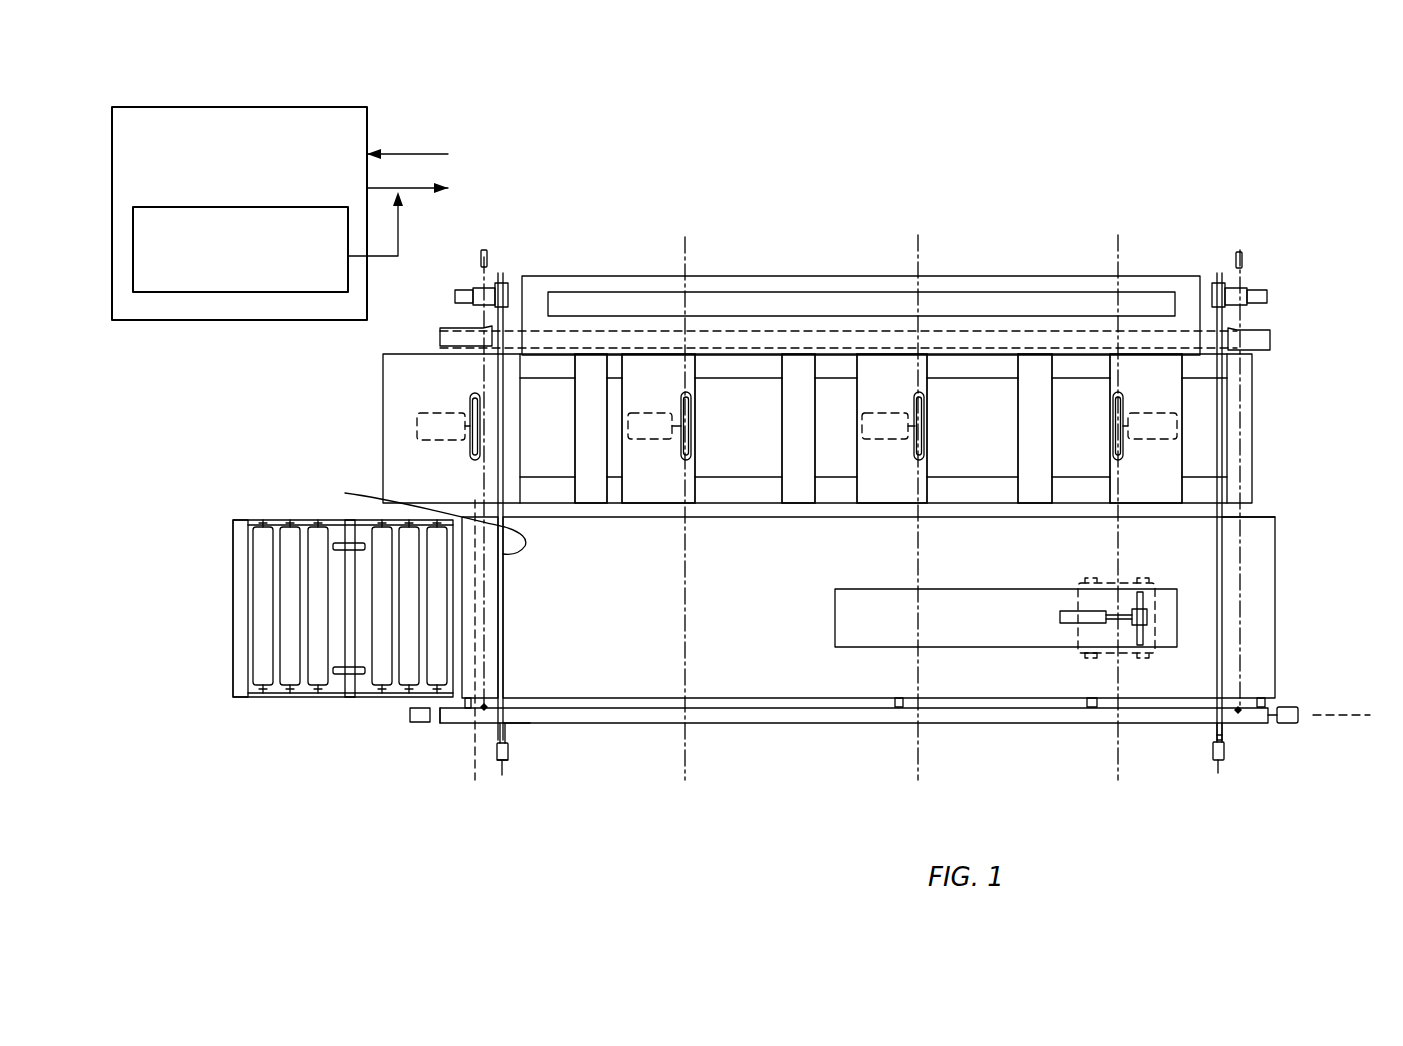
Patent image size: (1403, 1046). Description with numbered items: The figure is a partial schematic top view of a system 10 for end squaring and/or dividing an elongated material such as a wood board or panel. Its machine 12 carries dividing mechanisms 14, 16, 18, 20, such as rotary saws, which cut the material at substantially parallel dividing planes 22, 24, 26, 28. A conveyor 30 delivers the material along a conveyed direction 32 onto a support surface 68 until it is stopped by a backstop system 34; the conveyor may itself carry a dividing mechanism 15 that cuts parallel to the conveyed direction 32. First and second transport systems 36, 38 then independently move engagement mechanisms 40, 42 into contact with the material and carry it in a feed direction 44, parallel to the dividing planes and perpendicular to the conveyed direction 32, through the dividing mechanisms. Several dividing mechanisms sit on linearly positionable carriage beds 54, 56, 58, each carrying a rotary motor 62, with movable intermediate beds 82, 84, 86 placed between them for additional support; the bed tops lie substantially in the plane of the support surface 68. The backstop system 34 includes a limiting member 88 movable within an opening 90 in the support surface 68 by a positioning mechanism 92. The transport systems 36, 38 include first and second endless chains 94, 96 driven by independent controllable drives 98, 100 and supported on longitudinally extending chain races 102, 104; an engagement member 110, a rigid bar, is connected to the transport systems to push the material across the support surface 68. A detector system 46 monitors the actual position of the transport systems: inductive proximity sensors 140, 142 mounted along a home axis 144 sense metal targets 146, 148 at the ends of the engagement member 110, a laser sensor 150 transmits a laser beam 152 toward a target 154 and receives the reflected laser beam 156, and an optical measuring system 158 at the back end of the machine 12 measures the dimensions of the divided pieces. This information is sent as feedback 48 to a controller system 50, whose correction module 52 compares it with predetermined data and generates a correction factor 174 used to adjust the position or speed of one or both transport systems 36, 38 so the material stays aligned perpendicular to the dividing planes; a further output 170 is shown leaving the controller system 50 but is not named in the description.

The system 10 is at (675, 802).
The machine 12 is at (373, 67).
The dividing mechanism 14 is at (1182, 408).
The dividing mechanism 15 is at (340, 545).
The dividing mechanism 16 is at (940, 417).
The dividing mechanism 18 is at (703, 418).
The dividing mechanism 20 is at (383, 413).
The dividing plane 22 is at (1119, 768).
The dividing plane 24 is at (919, 760).
The dividing plane 26 is at (686, 742).
The dividing plane 28 is at (474, 782).
The conveyor 30 is at (265, 735).
The conveyed direction 32 is at (207, 610).
The backstop system 34 is at (1075, 630).
The first transport system 36 is at (1230, 780).
The second transport system 38 is at (512, 762).
The engagement mechanism 40 is at (1205, 735).
The engagement mechanism 42 is at (522, 730).
The feed direction 44 is at (888, 755).
The detector system 46 is at (490, 157).
The feedback 48 is at (440, 150).
The controller system 50 is at (239, 213).
The correction module 52 is at (240, 249).
The carriage bed 54 is at (1148, 362).
The carriage bed 56 is at (893, 358).
The carriage bed 58 is at (663, 362).
The rotary motor 62 is at (425, 412).
The support surface 68 is at (870, 612).
The intermediate bed 82 is at (1040, 380).
The intermediate bed 84 is at (810, 360).
The intermediate bed 86 is at (593, 358).
The limiting member 88 is at (1150, 589).
The opening 90 is at (1028, 634).
The positioning mechanism 92 is at (1086, 610).
The first endless chain 94 is at (1148, 634).
The second endless chain 96 is at (503, 635).
The drive 98 is at (1262, 292).
The drive 100 is at (455, 300).
The chain race 102 is at (1221, 517).
The chain race 104 is at (421, 511).
The engagement member 110 is at (1271, 342).
The inductive proximity sensor 140 is at (1300, 708).
The inductive proximity sensor 142 is at (408, 720).
The home axis 144 is at (1345, 722).
The metal target 146 is at (1283, 723).
The metal target 148 is at (438, 724).
The laser sensor 150 is at (485, 248).
The laser beam 152 is at (500, 355).
The target 154 is at (478, 715).
The reflected laser beam 156 is at (861, 482).
The optical measuring system 158 is at (1003, 298).
The output signal 170 is at (386, 197).
The correction factor 174 is at (398, 228).